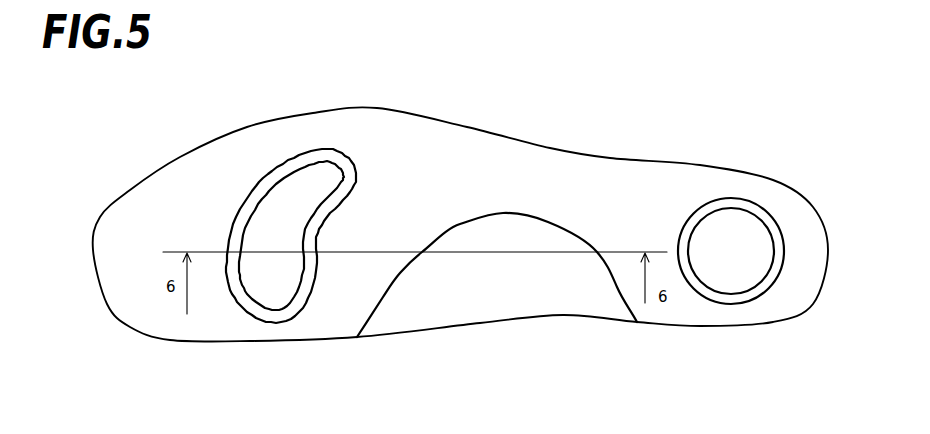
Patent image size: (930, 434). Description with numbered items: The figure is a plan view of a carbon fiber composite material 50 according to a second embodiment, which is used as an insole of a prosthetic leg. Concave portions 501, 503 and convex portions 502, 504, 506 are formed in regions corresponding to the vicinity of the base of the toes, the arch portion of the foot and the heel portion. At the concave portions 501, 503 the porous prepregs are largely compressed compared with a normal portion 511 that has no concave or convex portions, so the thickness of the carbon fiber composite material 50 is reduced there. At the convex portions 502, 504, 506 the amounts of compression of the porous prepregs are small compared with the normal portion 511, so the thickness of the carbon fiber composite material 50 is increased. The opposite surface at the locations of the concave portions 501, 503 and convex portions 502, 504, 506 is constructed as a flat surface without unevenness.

The carbon fiber composite material 50 is at (440, 190).
The concave portion 501 is at (300, 221).
The convex portion 502 is at (273, 289).
The concave portion 503 is at (744, 254).
The convex portion 504 is at (483, 290).
The convex portion 506 is at (730, 274).
The normal portion 511 is at (155, 205).